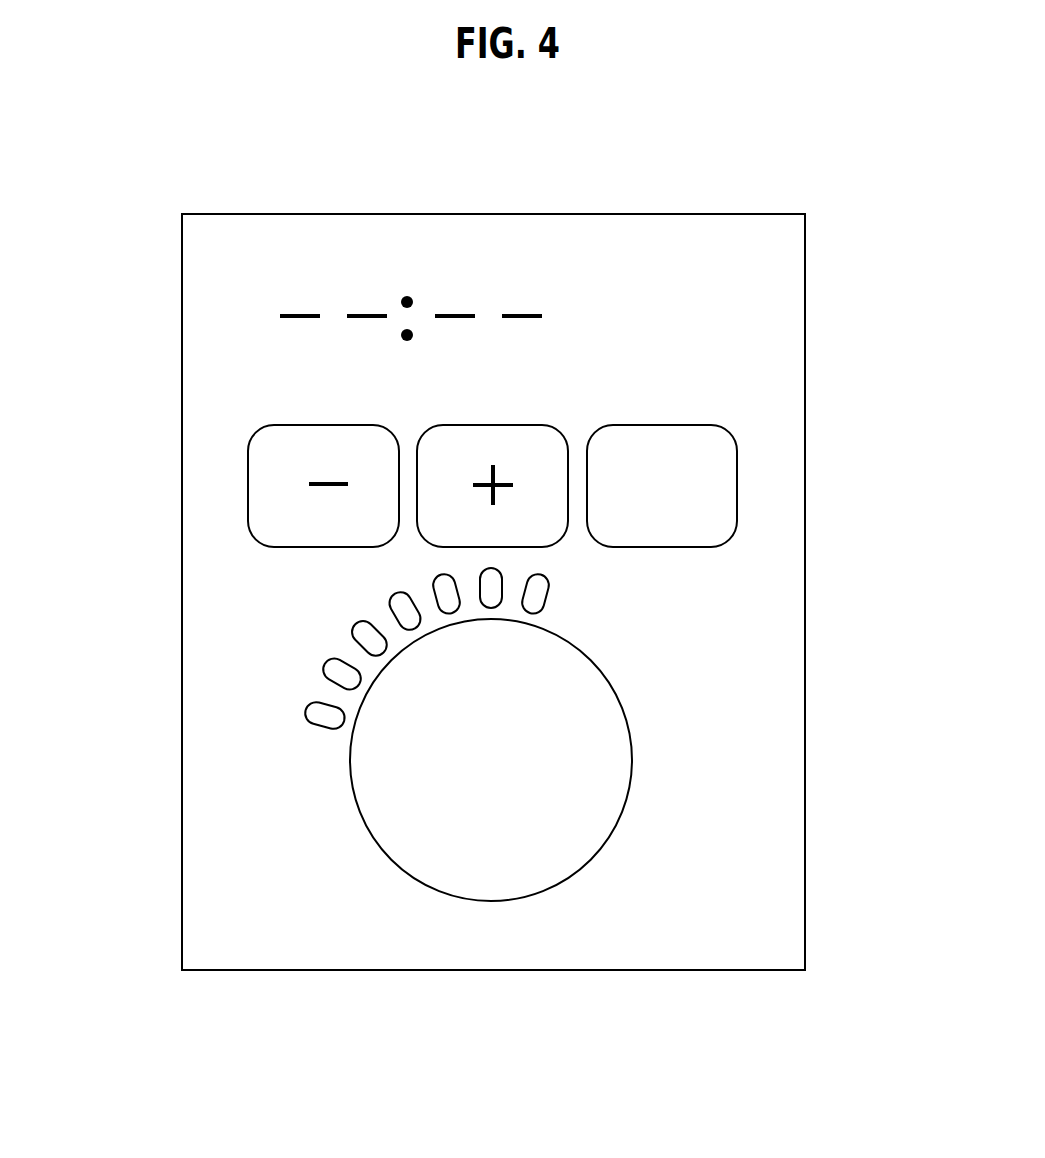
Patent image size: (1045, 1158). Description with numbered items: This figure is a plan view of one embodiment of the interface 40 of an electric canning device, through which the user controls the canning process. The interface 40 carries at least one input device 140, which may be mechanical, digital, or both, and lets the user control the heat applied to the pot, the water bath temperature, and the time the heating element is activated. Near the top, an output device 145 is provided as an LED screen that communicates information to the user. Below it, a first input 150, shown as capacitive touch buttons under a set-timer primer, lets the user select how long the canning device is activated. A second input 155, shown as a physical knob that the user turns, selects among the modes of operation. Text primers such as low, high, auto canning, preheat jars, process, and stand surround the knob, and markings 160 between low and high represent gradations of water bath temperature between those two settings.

The interface 40 is at (120, 981).
The input device 140 is at (180, 519).
The output device 145 is at (515, 312).
The first input 150 is at (282, 462).
The second input 155 is at (418, 810).
The markings 160 is at (545, 594).